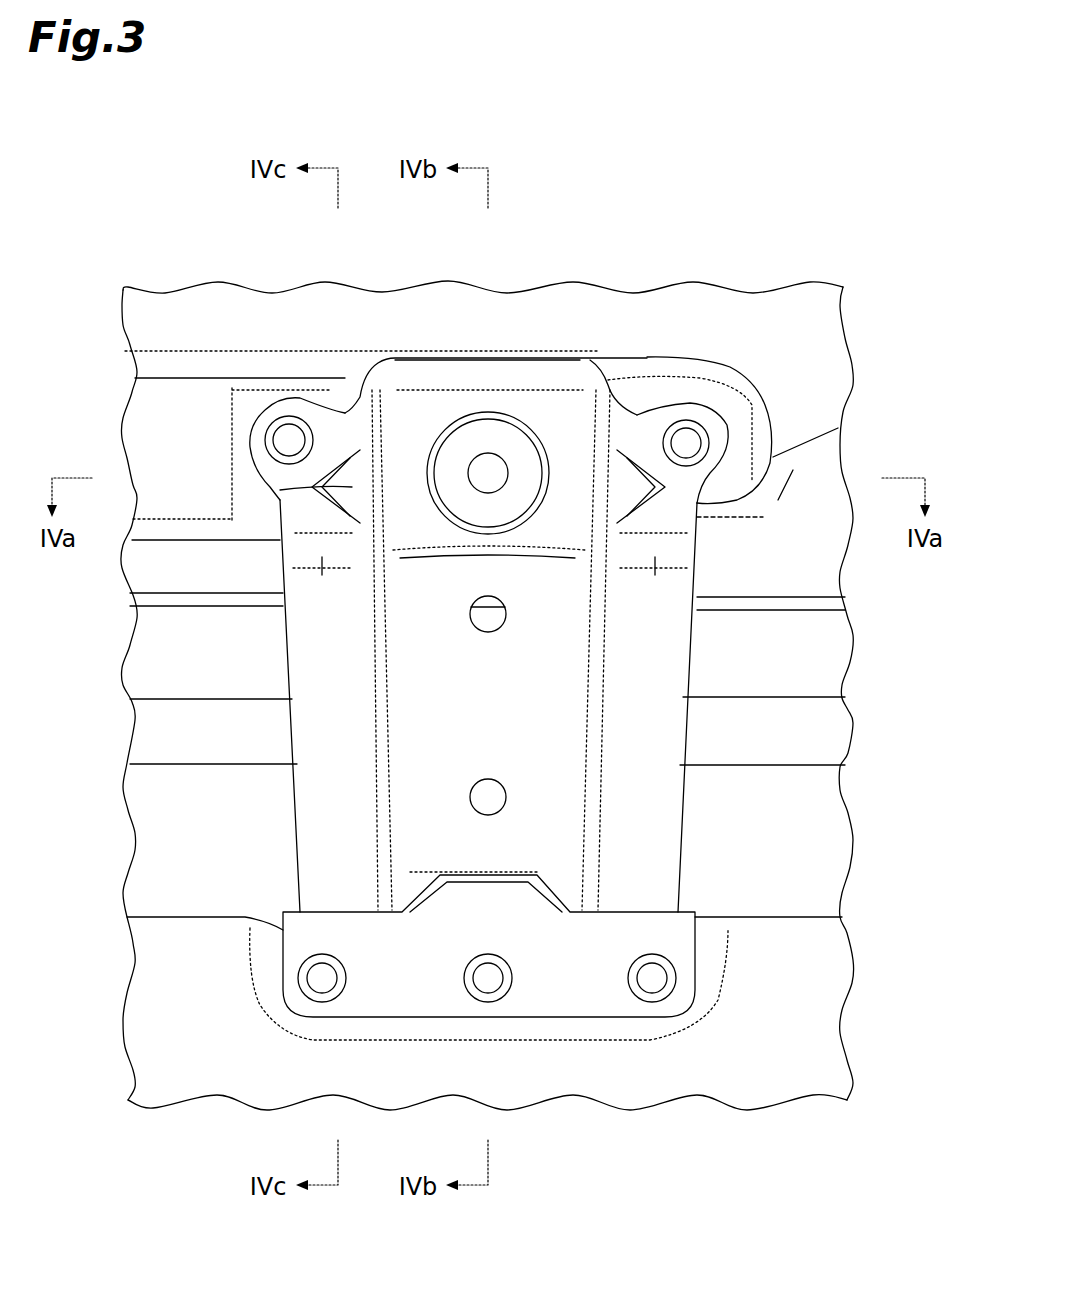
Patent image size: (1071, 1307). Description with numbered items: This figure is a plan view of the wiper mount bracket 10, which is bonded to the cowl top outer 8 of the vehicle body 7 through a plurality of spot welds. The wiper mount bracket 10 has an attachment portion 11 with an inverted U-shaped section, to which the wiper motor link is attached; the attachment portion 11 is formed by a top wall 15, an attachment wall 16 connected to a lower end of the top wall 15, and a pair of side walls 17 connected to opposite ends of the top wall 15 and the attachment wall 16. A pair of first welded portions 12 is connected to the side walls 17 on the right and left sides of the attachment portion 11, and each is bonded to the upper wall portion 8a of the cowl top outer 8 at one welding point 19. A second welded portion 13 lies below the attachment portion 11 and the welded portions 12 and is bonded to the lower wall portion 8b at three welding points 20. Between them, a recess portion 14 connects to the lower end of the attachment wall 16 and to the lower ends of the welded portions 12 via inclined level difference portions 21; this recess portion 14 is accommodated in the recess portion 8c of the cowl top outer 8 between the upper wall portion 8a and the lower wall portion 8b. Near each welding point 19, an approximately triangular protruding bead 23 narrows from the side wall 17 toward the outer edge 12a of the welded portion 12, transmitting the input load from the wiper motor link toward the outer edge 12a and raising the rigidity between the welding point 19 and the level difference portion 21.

The vehicle body 7 is at (815, 273).
The cowl top outer 8 is at (176, 313).
The upper wall portion 8a is at (165, 398).
The lower wall portion 8b is at (160, 968).
The recess portion 8c is at (160, 720).
The wiper mount bracket 10 is at (515, 335).
The attachment portion 11 is at (556, 350).
The welded portion 12 is at (325, 430).
The outer edge 12a is at (700, 513).
The welded portion 13 is at (572, 995).
The recess portion 14 is at (327, 827).
The top wall 15 is at (482, 375).
The attachment wall 16 is at (420, 418).
The side wall 17 is at (335, 425).
The welding point 19 is at (289, 440).
The welding point 20 is at (322, 980).
The level difference portion 21 is at (322, 560).
The bead 23 is at (330, 478).